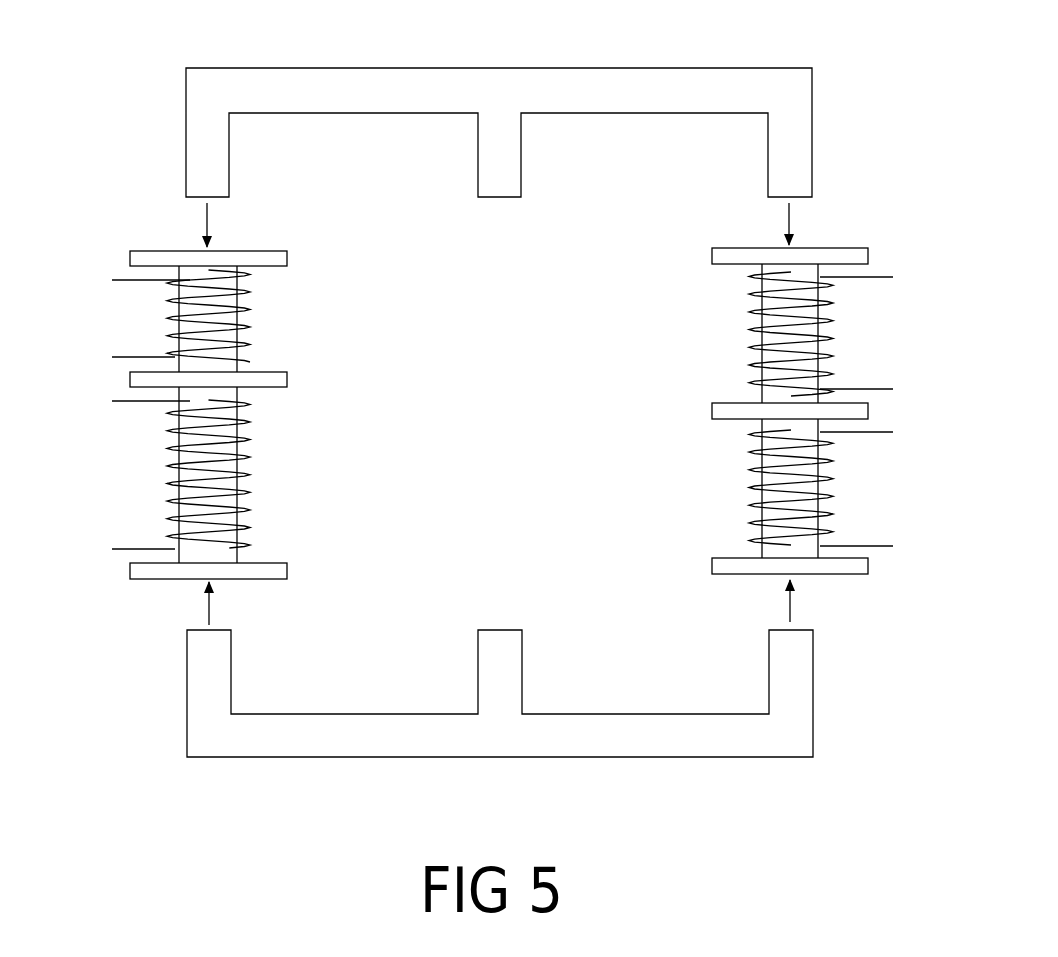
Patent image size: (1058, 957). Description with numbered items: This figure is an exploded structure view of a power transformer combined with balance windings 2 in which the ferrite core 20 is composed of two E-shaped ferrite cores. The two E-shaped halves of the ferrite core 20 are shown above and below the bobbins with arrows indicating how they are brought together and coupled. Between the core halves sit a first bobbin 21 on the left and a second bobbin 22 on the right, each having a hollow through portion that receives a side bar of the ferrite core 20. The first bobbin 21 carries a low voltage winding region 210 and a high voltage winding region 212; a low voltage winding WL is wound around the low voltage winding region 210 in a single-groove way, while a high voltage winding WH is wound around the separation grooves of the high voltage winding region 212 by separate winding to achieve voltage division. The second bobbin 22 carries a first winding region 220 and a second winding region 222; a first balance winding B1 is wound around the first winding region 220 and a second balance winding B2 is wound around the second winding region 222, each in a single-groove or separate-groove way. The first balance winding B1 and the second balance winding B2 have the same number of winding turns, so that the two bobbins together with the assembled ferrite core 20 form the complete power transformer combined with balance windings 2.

The power transformer combined with balance windings 2 is at (903, 21).
The ferrite core 20 is at (197, 113).
The first bobbin 21 is at (165, 250).
The second bobbin 22 is at (862, 255).
The low voltage winding region 210 is at (178, 300).
The high voltage winding region 212 is at (178, 475).
The first winding region 220 is at (827, 348).
The second winding region 222 is at (824, 506).
The low voltage winding WL is at (130, 279).
The high voltage winding WH is at (130, 401).
The first balance winding B1 is at (857, 278).
The second balance winding B2 is at (860, 432).